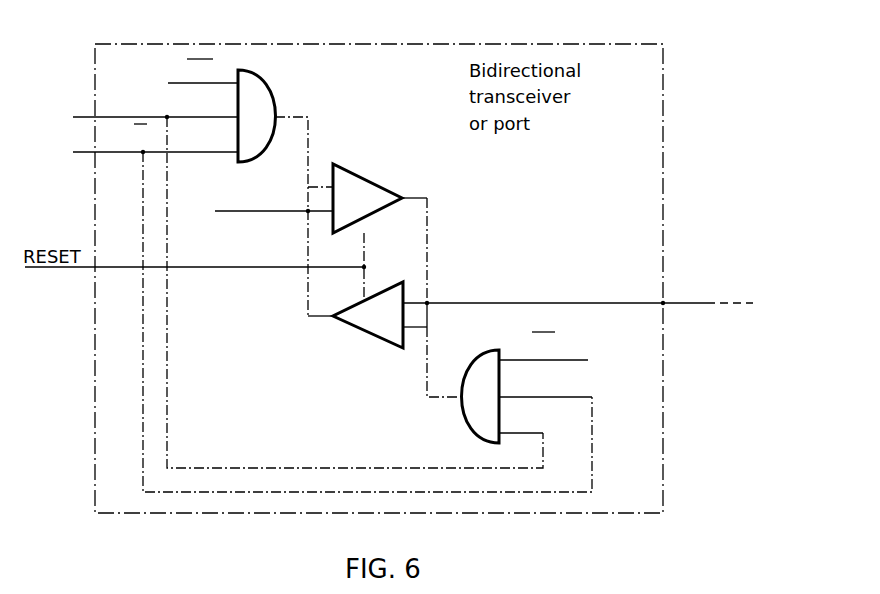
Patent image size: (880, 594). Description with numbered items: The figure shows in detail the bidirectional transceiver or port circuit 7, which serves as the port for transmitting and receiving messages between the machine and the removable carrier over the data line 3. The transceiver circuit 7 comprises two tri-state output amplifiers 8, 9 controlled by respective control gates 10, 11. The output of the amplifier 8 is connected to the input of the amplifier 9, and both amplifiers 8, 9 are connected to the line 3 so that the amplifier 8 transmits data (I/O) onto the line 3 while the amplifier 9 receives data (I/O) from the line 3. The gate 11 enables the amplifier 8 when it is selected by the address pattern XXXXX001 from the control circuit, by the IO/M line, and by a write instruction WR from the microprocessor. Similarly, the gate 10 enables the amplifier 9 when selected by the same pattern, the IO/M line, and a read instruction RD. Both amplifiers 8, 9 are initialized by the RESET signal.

The data line 3 is at (670, 297).
The bidirectional transceiver or port circuit 7 is at (668, 52).
The tri-state output amplifier 8 is at (352, 157).
The tri-state output amplifier 9 is at (362, 332).
The control gate 10 is at (472, 433).
The control gate 11 is at (270, 80).